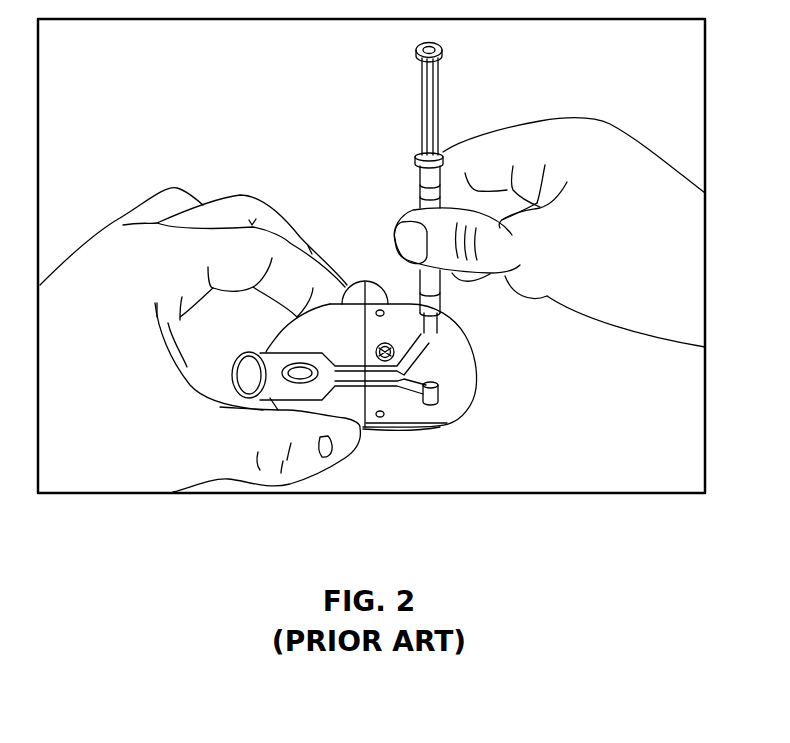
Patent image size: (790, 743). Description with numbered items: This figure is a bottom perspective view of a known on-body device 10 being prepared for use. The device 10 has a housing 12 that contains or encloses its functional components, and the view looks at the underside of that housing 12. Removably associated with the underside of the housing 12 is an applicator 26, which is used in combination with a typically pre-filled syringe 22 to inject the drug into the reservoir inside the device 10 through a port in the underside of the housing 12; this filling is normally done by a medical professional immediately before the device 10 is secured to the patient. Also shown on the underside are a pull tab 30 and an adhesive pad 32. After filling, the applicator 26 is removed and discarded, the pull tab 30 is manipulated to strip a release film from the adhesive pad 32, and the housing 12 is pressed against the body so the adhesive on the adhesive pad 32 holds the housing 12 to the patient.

The on-body device 10 is at (506, 373).
The housing 12 is at (380, 430).
The syringe 22 is at (438, 103).
The applicator 26 is at (442, 395).
The pull tab 30 is at (358, 283).
The adhesive pad 32 is at (407, 412).